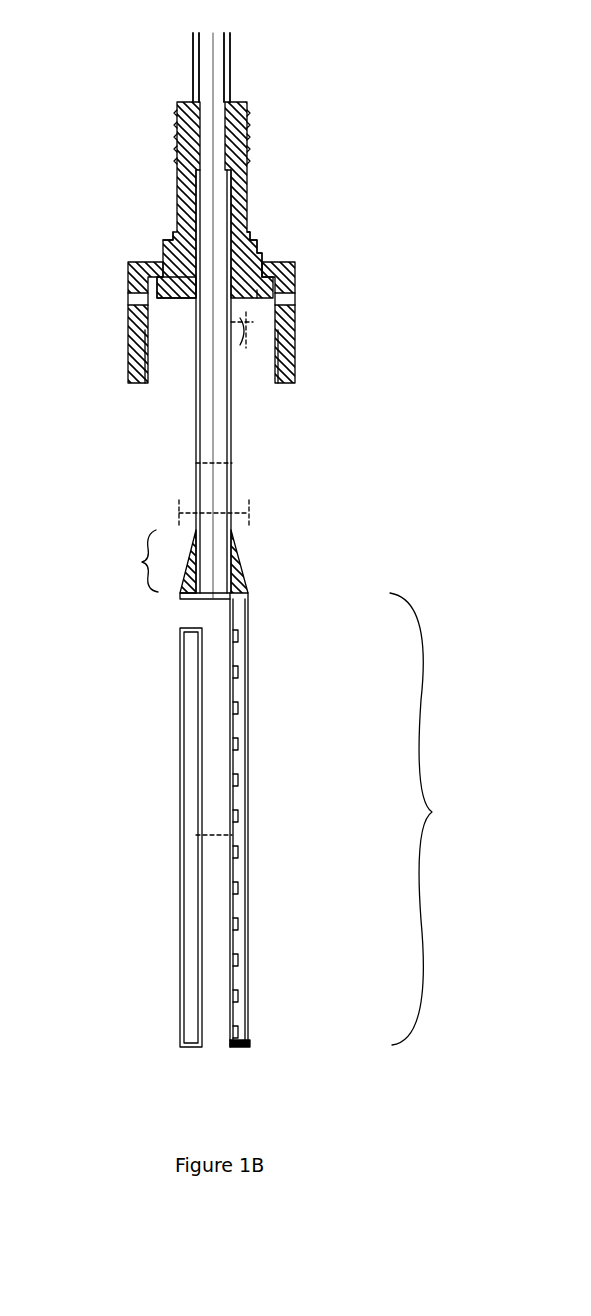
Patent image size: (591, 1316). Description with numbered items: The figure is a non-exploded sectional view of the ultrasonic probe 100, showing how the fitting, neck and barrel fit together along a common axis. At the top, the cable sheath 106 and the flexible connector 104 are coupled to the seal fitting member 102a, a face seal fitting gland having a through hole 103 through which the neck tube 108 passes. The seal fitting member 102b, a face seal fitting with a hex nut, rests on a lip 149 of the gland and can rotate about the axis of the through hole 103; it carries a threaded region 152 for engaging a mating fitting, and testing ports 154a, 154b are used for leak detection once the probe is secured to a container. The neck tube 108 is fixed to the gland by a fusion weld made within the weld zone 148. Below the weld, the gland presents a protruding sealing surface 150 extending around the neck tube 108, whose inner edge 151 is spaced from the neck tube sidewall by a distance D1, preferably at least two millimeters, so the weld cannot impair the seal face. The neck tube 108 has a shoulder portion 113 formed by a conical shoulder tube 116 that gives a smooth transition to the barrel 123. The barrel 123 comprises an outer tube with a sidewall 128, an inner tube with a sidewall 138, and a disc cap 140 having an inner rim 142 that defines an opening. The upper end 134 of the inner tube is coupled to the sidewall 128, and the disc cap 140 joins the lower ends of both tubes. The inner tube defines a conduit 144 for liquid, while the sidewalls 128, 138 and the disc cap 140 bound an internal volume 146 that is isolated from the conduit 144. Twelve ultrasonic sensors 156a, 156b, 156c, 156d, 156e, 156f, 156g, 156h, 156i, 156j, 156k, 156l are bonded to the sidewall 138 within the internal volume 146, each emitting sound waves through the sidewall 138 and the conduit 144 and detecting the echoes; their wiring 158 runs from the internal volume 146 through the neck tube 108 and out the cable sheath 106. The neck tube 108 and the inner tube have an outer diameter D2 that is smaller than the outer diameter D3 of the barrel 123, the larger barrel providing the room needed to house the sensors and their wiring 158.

The ultrasonic probe 100 is at (90, 130).
The cable sheath 106 is at (229, 60).
The flexible connector 104 is at (243, 168).
The through hole 103 is at (246, 243).
The seal fitting member 102a is at (252, 243).
The seal fitting member 102b is at (285, 262).
The lip 149 is at (162, 264).
The testing port 154a is at (130, 294).
The testing port 154b is at (297, 291).
The weld zone 148 is at (187, 299).
The threaded region 152 is at (148, 352).
The inner edge 151 is at (257, 298).
The protruding sealing surface 150 is at (252, 298).
The distance D1 is at (245, 340).
The outer diameter D2 is at (200, 466).
The outer diameter D3 is at (207, 511).
The neck tube 108 is at (232, 495).
The shoulder tube 116 is at (238, 545).
The shoulder portion 113 is at (142, 562).
The wiring 158 is at (245, 597).
The upper end 134 is at (180, 628).
The conduit 144 is at (212, 765).
The internal volume 146 is at (240, 728).
The ultrasonic sensor 156a is at (238, 636).
The ultrasonic sensor 156b is at (238, 672).
The ultrasonic sensor 156c is at (238, 708).
The ultrasonic sensor 156d is at (238, 744).
The ultrasonic sensor 156e is at (238, 780).
The ultrasonic sensor 156f is at (238, 816).
The ultrasonic sensor 156g is at (238, 852).
The ultrasonic sensor 156h is at (238, 888).
The ultrasonic sensor 156i is at (238, 924).
The ultrasonic sensor 156j is at (238, 960).
The ultrasonic sensor 156k is at (238, 996).
The ultrasonic sensor 156l is at (238, 1032).
The sidewall 128 is at (240, 945).
The disc cap 140 is at (243, 1047).
The inner rim 142 is at (231, 1047).
The sidewall 138 is at (230, 983).
The barrel 123 is at (435, 819).